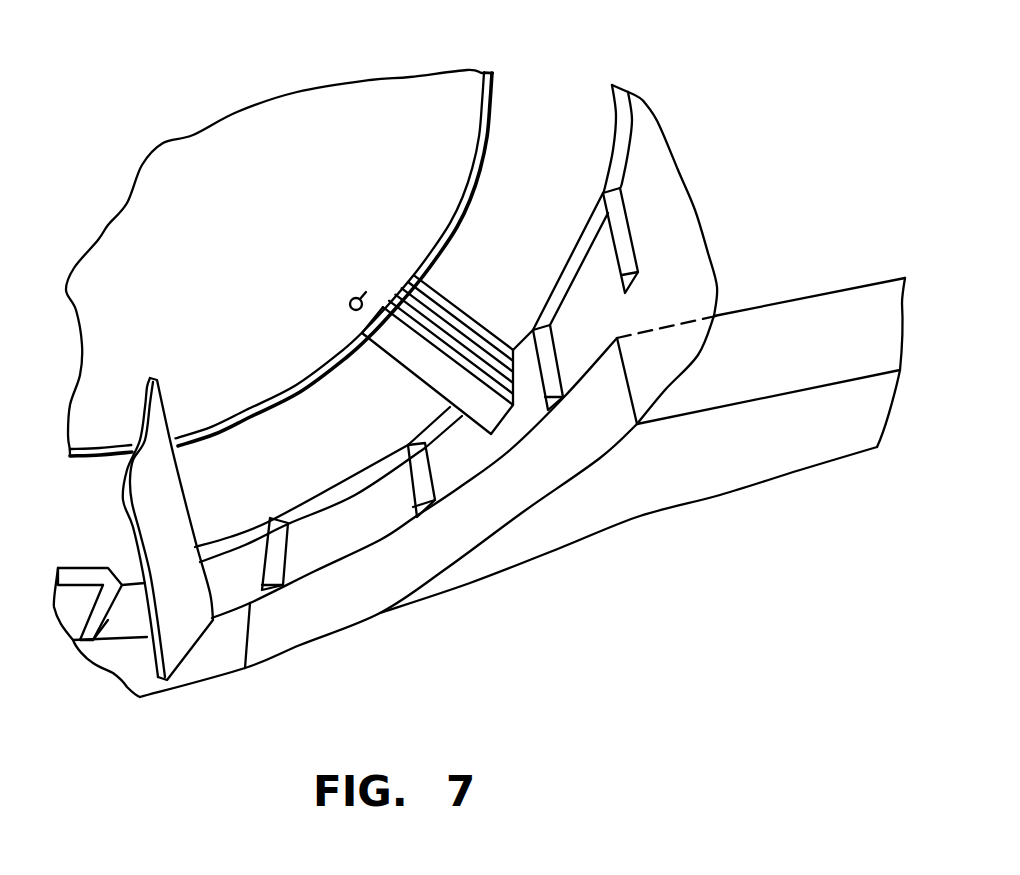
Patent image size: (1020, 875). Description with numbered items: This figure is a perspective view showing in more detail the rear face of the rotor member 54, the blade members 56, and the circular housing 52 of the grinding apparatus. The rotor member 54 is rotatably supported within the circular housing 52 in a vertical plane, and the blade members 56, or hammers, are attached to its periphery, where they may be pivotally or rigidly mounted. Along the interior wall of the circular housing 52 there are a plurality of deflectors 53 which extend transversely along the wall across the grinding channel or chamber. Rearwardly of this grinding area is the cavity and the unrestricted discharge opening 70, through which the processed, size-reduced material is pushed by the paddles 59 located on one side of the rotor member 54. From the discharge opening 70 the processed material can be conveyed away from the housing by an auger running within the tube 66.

The circular housing 52 is at (694, 186).
The deflectors 53 is at (547, 337).
The rotor member 54 is at (278, 160).
The blade members 56 is at (418, 322).
The paddles 59 is at (172, 648).
The tube 66 is at (719, 468).
The discharge opening 70 is at (530, 512).